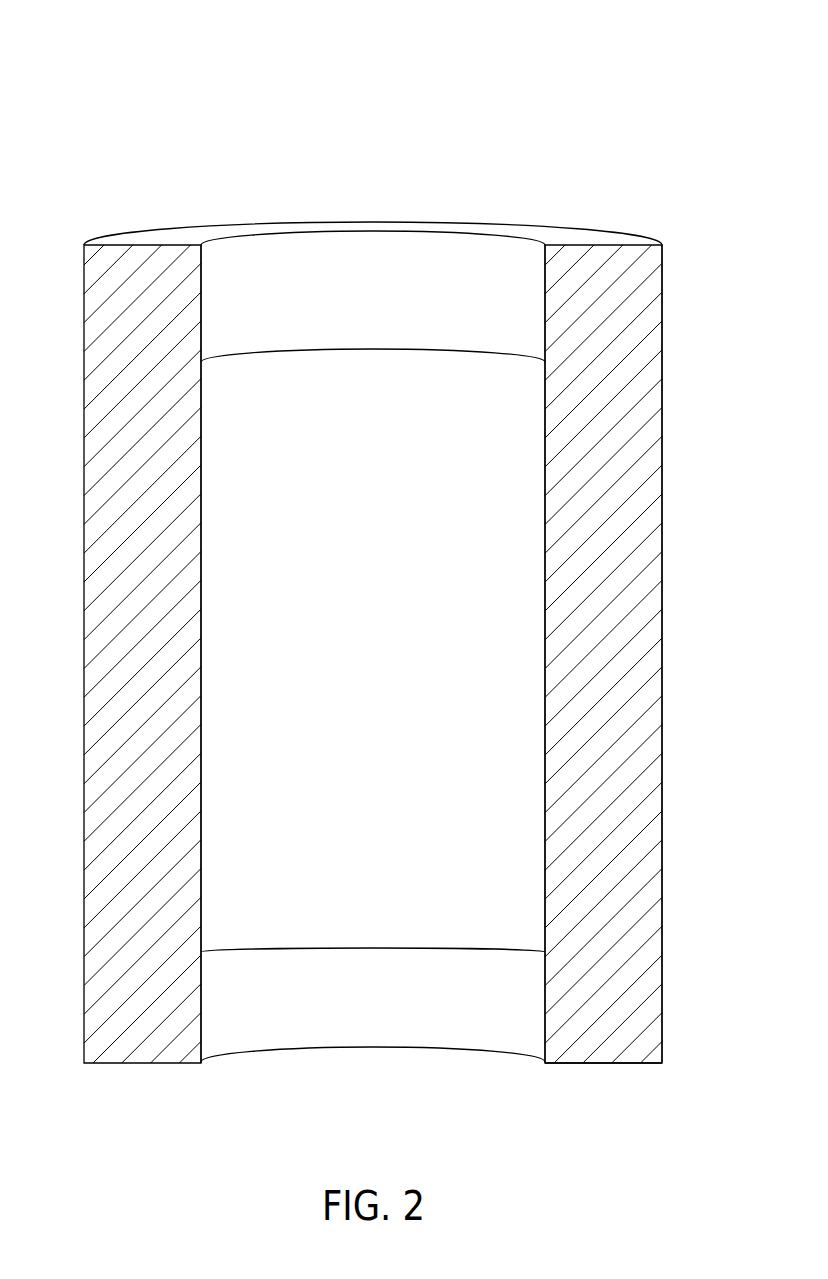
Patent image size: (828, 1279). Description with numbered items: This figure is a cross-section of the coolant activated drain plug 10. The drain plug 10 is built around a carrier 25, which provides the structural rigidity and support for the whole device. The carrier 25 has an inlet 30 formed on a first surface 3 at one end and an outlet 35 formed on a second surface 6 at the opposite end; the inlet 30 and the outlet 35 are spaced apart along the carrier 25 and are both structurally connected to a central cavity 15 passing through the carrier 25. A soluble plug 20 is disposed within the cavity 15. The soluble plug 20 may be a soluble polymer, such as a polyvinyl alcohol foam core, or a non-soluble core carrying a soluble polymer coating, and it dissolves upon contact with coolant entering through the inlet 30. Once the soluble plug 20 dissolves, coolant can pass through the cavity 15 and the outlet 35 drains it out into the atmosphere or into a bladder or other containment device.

The coolant activated drain plug 10 is at (115, 82).
The first surface 3 is at (216, 232).
The second surface 6 is at (598, 1065).
The cavity 15 is at (220, 487).
The soluble plug 20 is at (545, 528).
The carrier 25 is at (653, 635).
The inlet 30 is at (445, 207).
The outlet 35 is at (462, 1077).